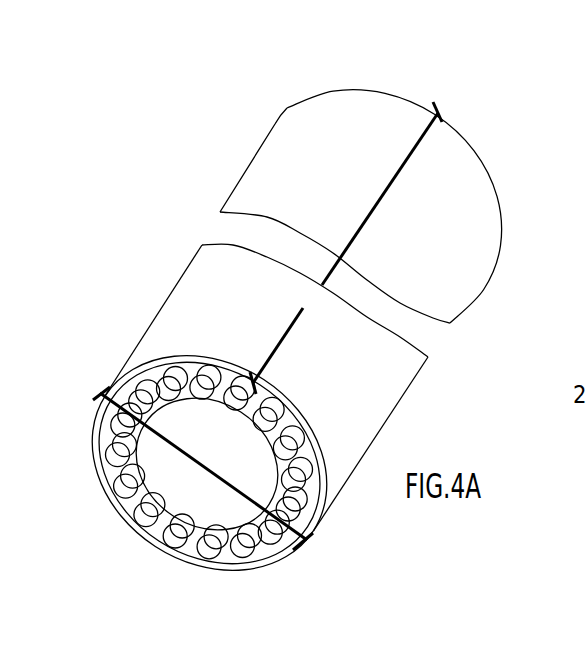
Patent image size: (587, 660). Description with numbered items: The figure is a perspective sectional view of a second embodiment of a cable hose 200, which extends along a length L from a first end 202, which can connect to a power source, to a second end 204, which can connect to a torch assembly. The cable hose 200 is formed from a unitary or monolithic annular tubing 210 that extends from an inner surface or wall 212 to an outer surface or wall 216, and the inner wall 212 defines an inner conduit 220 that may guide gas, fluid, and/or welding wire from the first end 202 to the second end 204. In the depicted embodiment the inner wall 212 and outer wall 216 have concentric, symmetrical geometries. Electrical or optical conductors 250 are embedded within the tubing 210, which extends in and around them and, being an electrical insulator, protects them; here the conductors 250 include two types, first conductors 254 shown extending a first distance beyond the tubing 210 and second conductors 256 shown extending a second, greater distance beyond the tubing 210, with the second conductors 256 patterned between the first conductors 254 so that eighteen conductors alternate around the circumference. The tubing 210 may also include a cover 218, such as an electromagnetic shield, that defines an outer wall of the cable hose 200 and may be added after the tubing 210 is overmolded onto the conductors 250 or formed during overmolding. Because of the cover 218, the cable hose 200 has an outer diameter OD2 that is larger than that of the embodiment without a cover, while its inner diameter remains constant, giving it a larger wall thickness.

The cable hose 200 is at (275, 345).
The first end 202 is at (125, 380).
The second end 204 is at (347, 177).
The tubing 210 is at (238, 405).
The inner wall 212 is at (200, 517).
The outer wall 216 is at (102, 477).
The cover 218 is at (240, 187).
The inner conduit 220 is at (208, 487).
The conductors 250 is at (200, 512).
The first conductors 254 is at (205, 550).
The second conductors 256 is at (230, 560).
The outer diameter OD2 is at (193, 463).
The length L is at (346, 248).